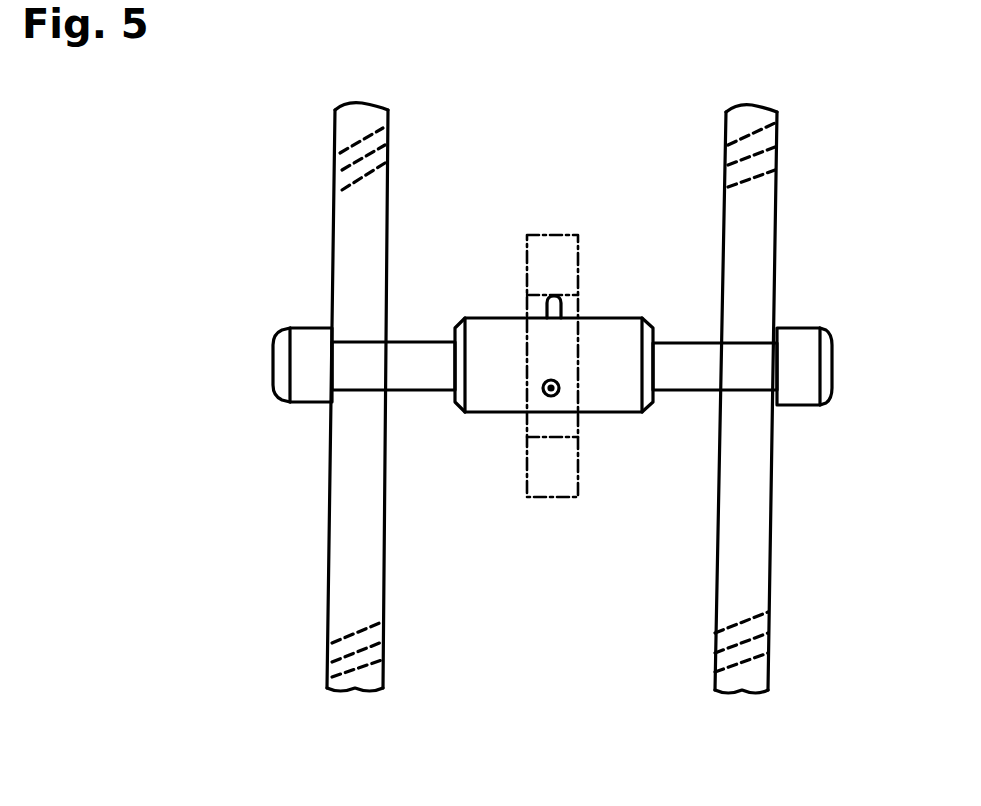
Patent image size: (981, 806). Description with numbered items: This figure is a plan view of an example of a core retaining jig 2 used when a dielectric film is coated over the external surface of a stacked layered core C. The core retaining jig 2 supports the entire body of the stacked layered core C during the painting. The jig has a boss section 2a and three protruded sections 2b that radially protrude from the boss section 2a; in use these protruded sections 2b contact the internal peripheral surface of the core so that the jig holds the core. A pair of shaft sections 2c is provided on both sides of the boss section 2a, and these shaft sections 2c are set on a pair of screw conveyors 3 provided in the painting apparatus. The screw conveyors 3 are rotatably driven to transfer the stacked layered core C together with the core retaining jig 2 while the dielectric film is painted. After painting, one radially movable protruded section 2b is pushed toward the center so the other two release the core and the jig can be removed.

The screw conveyor 3 is at (355, 503).
The core retaining jig 2 is at (526, 346).
The boss section 2a is at (597, 400).
The protruded section 2b is at (545, 312).
The shaft section 2c is at (380, 360).
The stacked layered core C is at (551, 235).